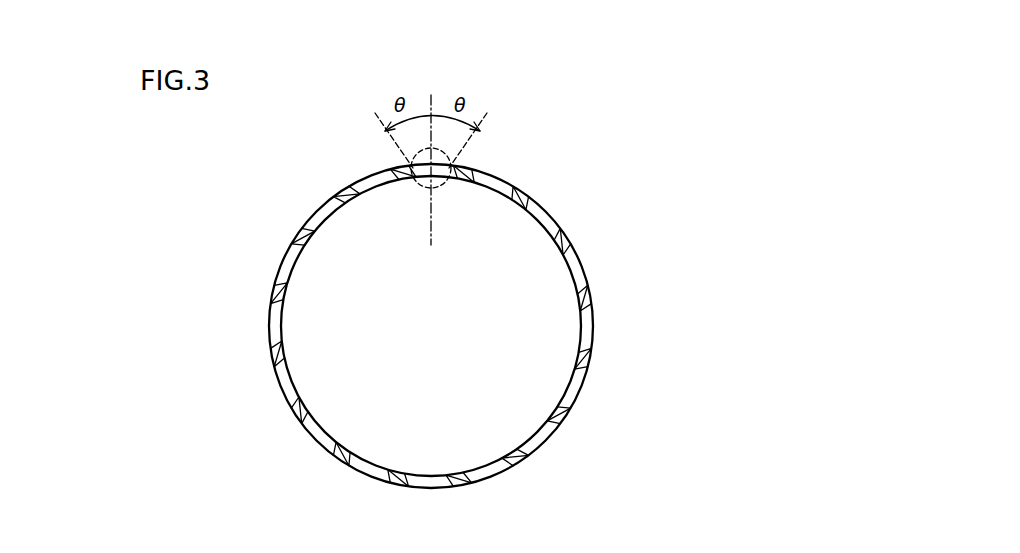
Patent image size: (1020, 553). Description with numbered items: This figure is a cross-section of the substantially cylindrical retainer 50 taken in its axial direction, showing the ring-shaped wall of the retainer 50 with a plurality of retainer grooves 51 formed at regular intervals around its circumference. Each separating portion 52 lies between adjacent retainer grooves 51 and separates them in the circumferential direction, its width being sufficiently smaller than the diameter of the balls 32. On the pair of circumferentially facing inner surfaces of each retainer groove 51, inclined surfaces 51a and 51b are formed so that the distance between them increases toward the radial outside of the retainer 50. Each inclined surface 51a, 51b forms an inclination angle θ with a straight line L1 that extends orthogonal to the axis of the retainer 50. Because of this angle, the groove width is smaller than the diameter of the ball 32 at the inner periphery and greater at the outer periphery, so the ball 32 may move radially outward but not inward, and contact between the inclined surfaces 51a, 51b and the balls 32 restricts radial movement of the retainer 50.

The retainer 50 is at (580, 147).
The retainer groove 51 is at (508, 182).
The inclined surface 51a is at (410, 166).
The inclined surface 51b is at (453, 166).
The separating portion 52 is at (563, 231).
The ball 32 is at (444, 185).
The straight line L1 is at (430, 229).